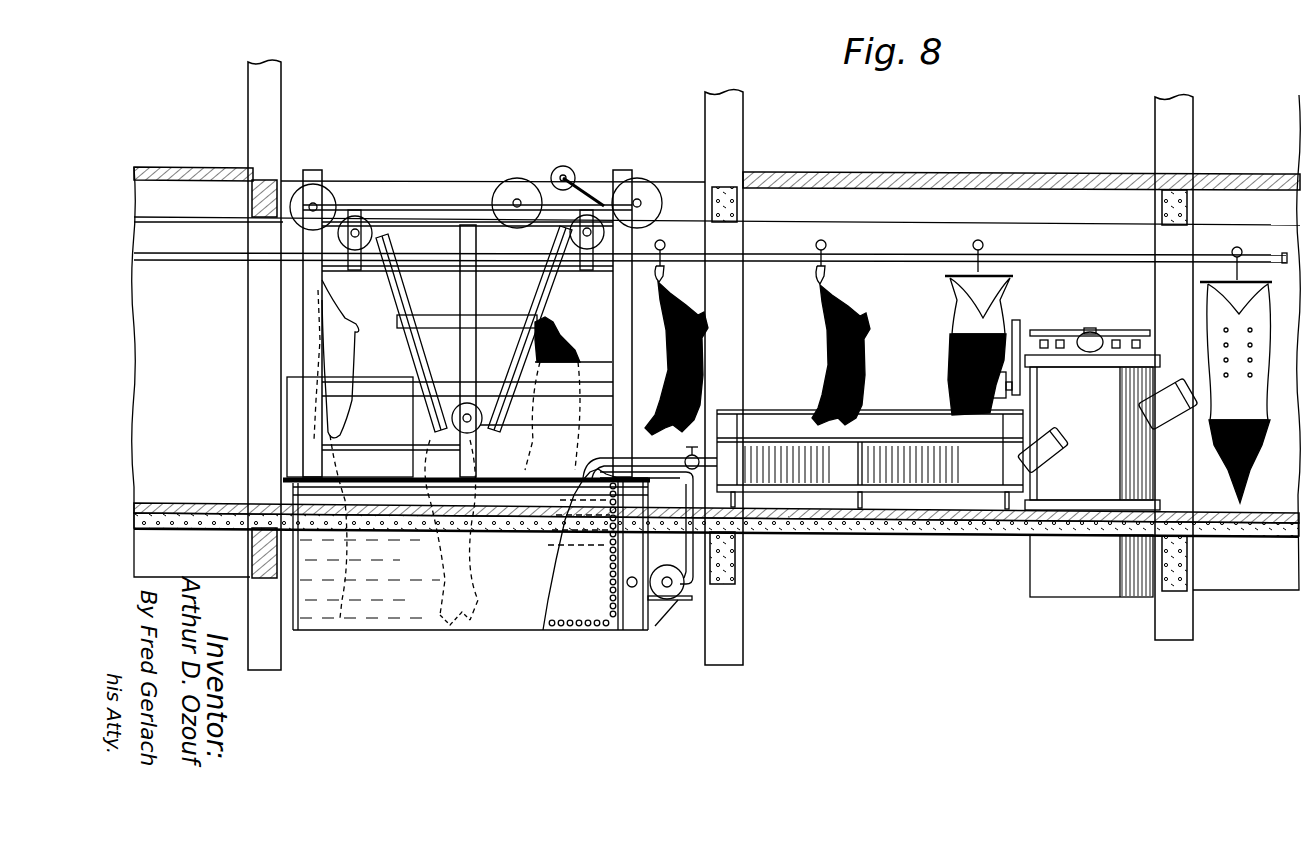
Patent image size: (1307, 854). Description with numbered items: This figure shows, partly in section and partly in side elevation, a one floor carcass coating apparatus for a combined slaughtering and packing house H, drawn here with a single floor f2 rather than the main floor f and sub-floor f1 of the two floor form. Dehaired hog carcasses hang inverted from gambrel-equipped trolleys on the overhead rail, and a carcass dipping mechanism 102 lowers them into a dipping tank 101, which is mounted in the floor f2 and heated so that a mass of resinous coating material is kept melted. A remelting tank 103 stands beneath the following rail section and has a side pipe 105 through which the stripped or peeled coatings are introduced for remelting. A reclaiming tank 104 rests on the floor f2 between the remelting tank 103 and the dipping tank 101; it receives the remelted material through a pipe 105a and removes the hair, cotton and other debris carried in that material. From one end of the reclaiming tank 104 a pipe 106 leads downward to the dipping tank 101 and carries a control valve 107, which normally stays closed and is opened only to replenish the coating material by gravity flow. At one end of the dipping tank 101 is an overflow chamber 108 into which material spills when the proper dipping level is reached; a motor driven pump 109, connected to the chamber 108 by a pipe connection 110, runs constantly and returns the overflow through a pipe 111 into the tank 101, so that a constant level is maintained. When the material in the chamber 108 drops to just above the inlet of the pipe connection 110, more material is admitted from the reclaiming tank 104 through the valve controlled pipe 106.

The dipping tank 101 is at (420, 617).
The carcass dipping mechanism 102 is at (420, 204).
The remelting tank 103 is at (1100, 598).
The reclaiming tank 104 is at (916, 474).
The side pipe 105 is at (1168, 435).
The pipe 105a is at (1050, 445).
The pipe 106 is at (706, 457).
The control valve 107 is at (698, 455).
The overflow chamber 108 is at (631, 612).
The motor driven pump 109 is at (679, 601).
The pipe connection 110 is at (600, 630).
The pipe 111 is at (691, 586).
The combined slaughtering and packing house H is at (1213, 175).
The main floor f is at (213, 256).
The sub-floor f1 is at (878, 258).
The single floor f2 is at (1270, 537).